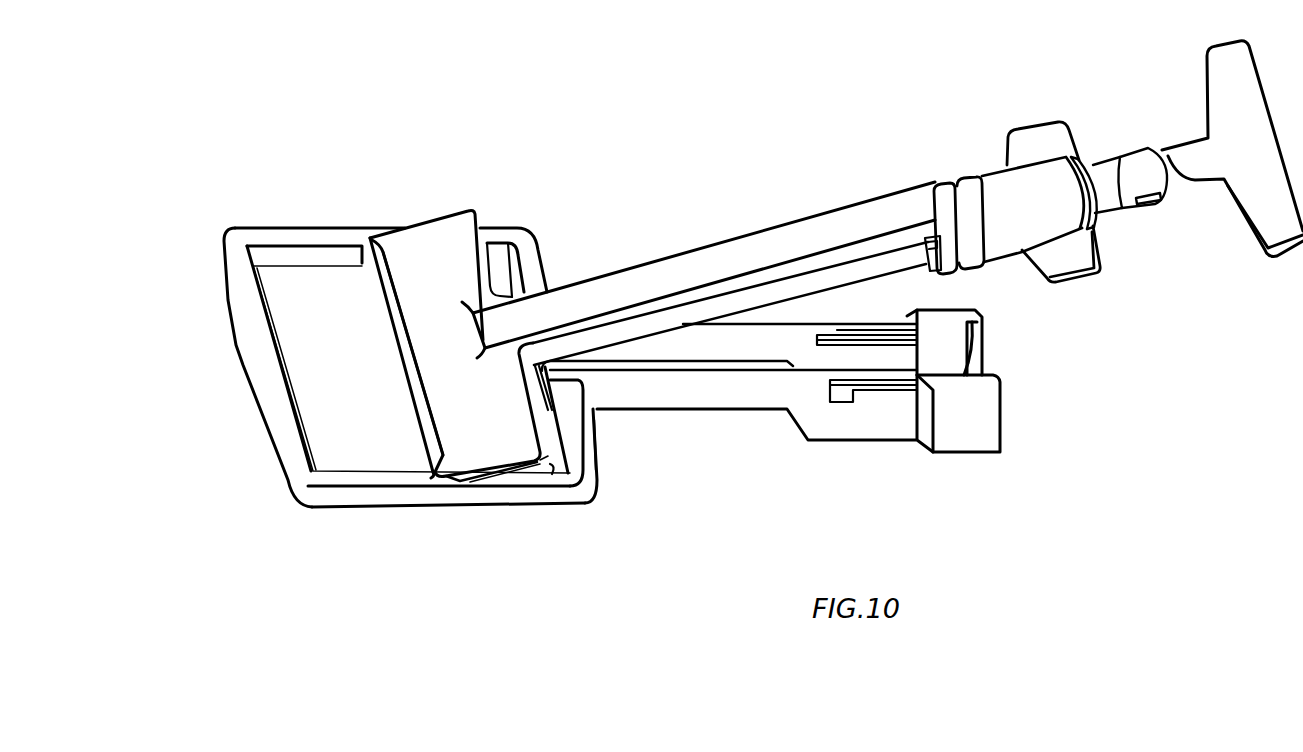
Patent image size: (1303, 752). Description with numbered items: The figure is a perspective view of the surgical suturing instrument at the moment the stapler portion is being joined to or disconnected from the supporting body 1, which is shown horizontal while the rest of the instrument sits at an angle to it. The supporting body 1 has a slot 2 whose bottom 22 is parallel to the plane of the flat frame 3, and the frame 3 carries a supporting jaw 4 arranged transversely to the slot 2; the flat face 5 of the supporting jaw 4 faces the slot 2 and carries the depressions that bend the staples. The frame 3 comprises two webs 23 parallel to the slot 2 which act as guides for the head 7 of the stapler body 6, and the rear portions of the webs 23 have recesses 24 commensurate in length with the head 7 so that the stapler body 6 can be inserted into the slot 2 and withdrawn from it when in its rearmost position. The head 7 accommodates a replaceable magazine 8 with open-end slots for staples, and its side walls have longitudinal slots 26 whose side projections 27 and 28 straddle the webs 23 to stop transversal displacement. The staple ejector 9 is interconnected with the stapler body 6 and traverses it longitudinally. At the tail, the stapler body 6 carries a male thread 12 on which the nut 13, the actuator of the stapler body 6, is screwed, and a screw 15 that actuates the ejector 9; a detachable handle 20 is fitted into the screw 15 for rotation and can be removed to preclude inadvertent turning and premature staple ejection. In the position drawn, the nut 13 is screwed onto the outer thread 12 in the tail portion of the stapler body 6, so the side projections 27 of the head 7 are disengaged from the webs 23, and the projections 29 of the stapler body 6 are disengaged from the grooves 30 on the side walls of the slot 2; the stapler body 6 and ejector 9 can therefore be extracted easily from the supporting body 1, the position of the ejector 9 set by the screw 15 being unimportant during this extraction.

The supporting body 1 is at (700, 414).
The slot 2 is at (747, 337).
The flat frame 3 is at (599, 453).
The supporting jaw 4 is at (267, 388).
The flat face 5 is at (288, 370).
The stapler body 6 is at (655, 254).
The head 7 is at (428, 230).
The replaceable magazine 8 is at (401, 365).
The staple ejector 9 is at (883, 268).
The male thread 12 is at (1078, 164).
The nut 13 is at (988, 178).
The screw 15 is at (1103, 165).
The detachable handle 20 is at (1218, 122).
The bottom 22 is at (537, 373).
The webs 23 is at (278, 236).
The recesses 24 is at (497, 246).
The longitudinal slots 26 is at (494, 474).
The side projection 27 is at (523, 472).
The side projection 28 is at (448, 480).
The projections 29 is at (929, 270).
The grooves 30 is at (836, 330).